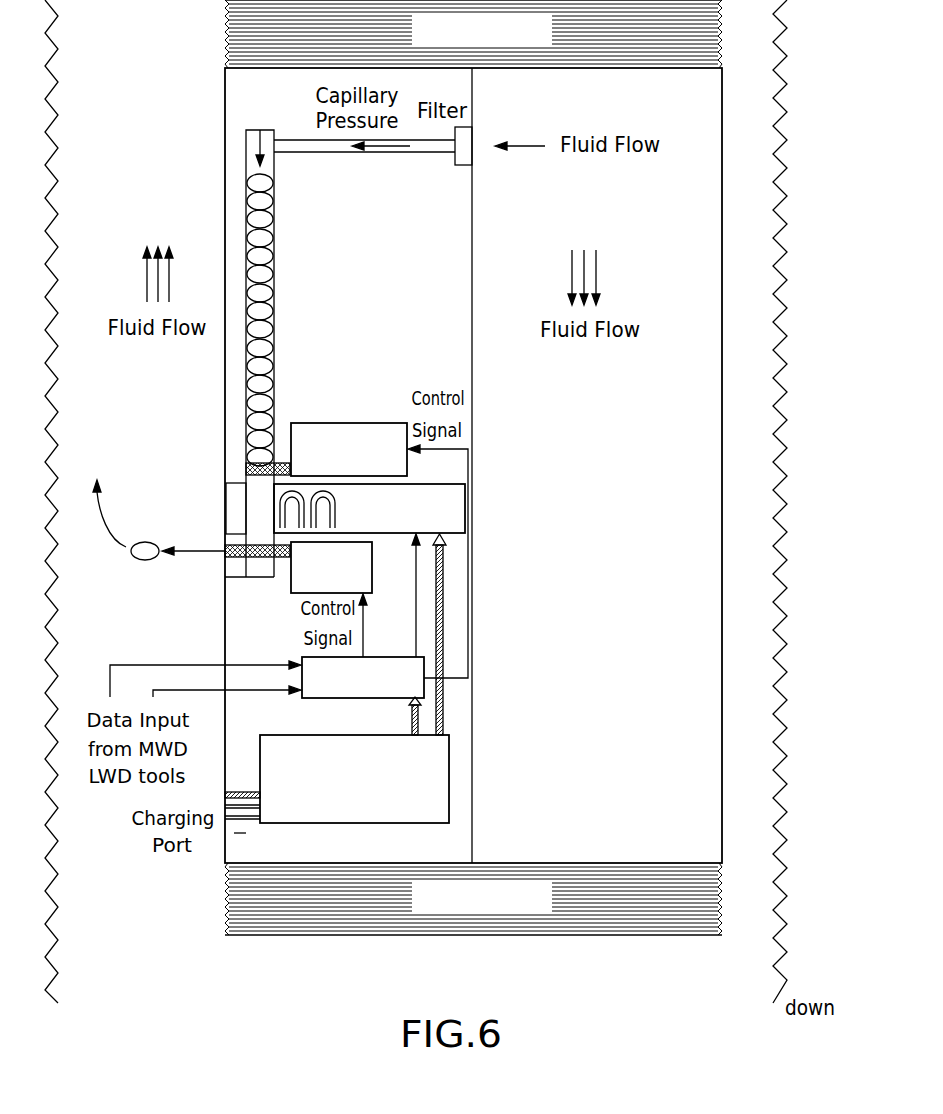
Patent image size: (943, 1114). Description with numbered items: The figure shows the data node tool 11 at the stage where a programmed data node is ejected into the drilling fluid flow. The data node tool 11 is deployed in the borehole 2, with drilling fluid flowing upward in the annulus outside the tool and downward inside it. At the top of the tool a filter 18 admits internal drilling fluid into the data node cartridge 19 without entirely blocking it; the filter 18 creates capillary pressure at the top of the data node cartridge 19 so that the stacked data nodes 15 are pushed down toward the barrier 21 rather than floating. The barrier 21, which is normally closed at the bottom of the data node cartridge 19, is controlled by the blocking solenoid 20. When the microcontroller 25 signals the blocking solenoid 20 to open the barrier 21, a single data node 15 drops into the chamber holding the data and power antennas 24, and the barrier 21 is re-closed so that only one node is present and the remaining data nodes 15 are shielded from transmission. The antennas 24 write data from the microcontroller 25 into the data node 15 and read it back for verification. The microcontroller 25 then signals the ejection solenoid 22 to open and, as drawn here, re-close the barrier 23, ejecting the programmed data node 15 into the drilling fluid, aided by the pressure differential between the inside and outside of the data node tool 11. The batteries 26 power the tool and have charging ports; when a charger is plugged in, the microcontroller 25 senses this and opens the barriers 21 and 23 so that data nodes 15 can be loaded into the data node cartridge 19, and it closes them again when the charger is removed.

The borehole 2 is at (783, 580).
The data node tool 11 is at (273, 104).
The data nodes 15 is at (270, 359).
The filter 18 is at (473, 158).
The data node cartridge 19 is at (274, 303).
The blocking solenoid 20 is at (361, 422).
The barrier 21 is at (285, 462).
The ejection solenoid 22 is at (367, 594).
The barrier 23 is at (285, 558).
The data and power antennas 24 is at (455, 520).
The microcontroller 25 is at (424, 690).
The batteries 26 is at (435, 777).